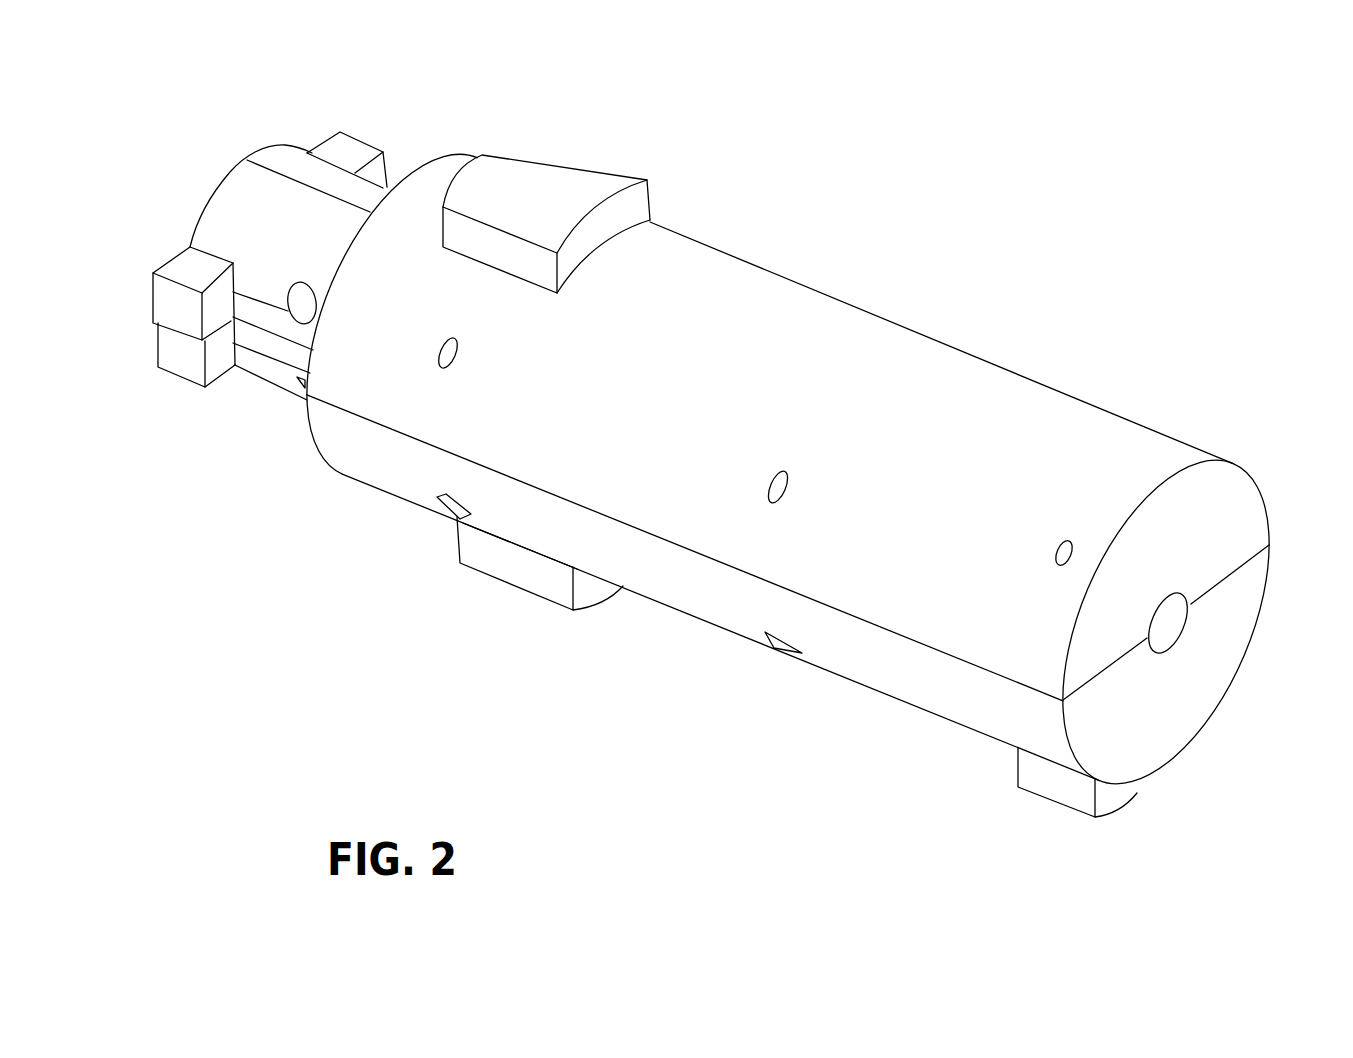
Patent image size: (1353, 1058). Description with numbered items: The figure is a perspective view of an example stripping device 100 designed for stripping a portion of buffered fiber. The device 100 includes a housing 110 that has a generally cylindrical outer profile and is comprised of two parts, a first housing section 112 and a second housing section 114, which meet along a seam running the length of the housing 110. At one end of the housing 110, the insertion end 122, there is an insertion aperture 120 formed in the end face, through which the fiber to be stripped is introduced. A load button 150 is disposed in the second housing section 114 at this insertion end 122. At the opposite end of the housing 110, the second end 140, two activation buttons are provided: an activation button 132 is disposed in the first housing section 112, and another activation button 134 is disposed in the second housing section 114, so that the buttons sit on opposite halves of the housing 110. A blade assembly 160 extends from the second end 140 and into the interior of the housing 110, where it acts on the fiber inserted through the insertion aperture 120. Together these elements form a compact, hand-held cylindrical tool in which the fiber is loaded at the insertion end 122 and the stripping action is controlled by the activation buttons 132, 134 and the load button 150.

The stripping device 100 is at (1014, 138).
The housing 110 is at (842, 297).
The first housing section 112 is at (913, 370).
The second housing section 114 is at (695, 600).
The insertion aperture 120 is at (1172, 622).
The insertion end 122 is at (1205, 447).
The activation button 132 is at (535, 148).
The activation button 134 is at (510, 582).
The second end 140 is at (255, 453).
The load button 150 is at (1030, 793).
The blade assembly 160 is at (193, 177).